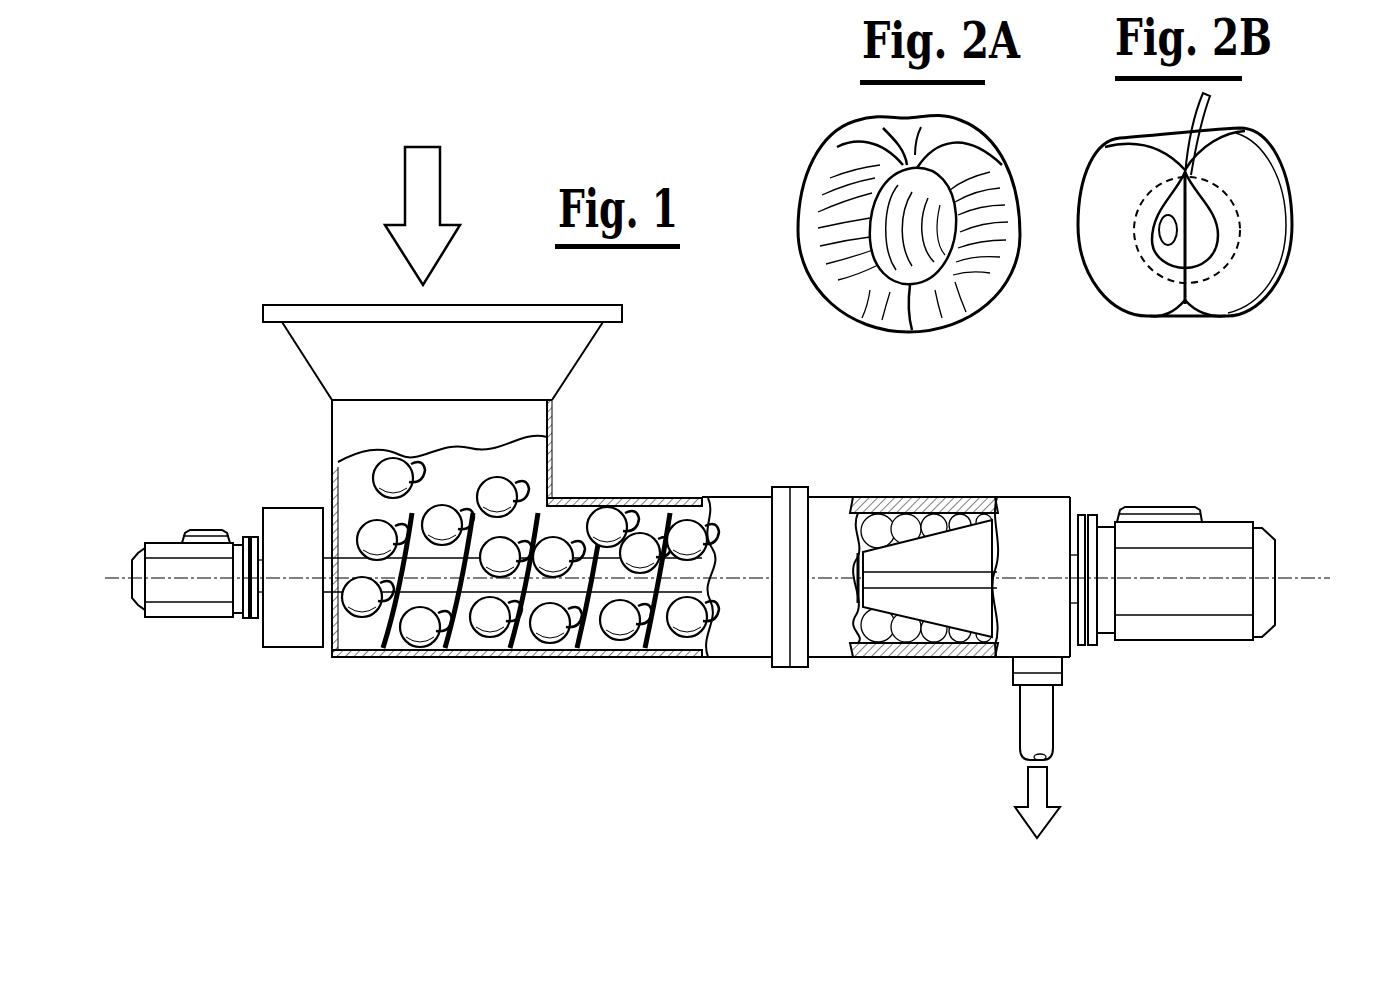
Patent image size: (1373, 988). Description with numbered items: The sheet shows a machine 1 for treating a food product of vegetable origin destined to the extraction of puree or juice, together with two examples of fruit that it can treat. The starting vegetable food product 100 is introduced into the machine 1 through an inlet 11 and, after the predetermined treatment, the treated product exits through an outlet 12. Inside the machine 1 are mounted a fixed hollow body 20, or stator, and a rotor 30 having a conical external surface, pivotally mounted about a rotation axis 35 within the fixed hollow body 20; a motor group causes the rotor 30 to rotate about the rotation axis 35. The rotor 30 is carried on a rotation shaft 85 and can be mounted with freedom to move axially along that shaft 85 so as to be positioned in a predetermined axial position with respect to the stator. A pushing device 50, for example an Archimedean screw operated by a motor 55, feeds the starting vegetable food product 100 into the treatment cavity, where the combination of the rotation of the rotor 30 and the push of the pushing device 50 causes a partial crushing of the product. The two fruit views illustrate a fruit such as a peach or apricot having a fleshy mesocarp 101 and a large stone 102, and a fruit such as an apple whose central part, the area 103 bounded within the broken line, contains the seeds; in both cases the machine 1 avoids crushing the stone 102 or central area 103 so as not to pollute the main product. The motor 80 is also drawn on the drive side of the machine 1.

In FIG. 1, the machine 1 is at (834, 468).
In FIG. 1, the inlet 11 is at (797, 601).
In FIG. 1, the outlet 12 is at (1066, 676).
In FIG. 1, the fixed hollow body 20 is at (961, 506).
In FIG. 1, the rotor 30 is at (948, 601).
In FIG. 1, the rotation axis 35 is at (1306, 582).
In FIG. 1, the pushing device 50 is at (648, 468).
In FIG. 1, the motor 55 is at (193, 638).
In FIG. 1, the press screw motor 80 is at (1236, 516).
In FIG. 1, the rotation shaft 85 is at (895, 584).
In FIG. 1, the food product of vegetable origin 100 is at (641, 553).
In FIG. 2A, the food product of vegetable origin 100 is at (1004, 157).
In FIG. 2B, the food product of vegetable origin 100 is at (1258, 121).
In FIG. 2A, the mesocarp 101 is at (973, 299).
In FIG. 2B, the mesocarp 101 is at (1234, 286).
In FIG. 2A, the stone 102 is at (884, 254).
In FIG. 2B, the stone 102 is at (1161, 242).
In FIG. 2B, the central part area 103 is at (1223, 221).